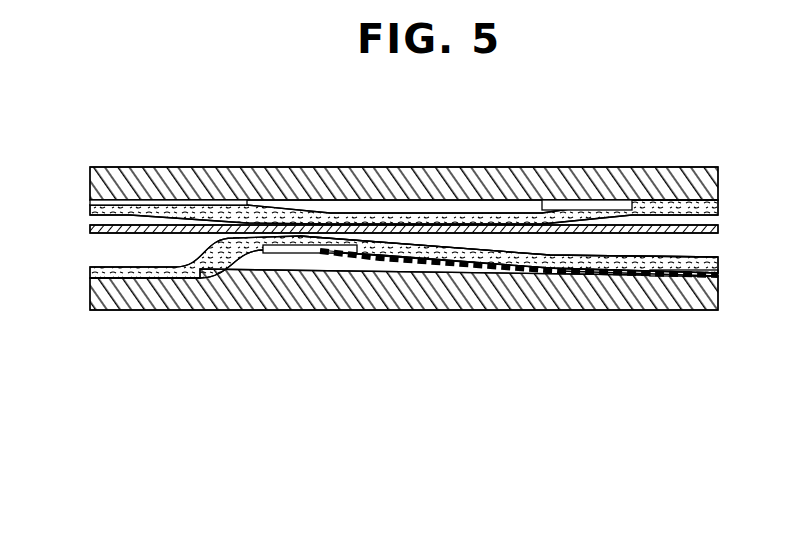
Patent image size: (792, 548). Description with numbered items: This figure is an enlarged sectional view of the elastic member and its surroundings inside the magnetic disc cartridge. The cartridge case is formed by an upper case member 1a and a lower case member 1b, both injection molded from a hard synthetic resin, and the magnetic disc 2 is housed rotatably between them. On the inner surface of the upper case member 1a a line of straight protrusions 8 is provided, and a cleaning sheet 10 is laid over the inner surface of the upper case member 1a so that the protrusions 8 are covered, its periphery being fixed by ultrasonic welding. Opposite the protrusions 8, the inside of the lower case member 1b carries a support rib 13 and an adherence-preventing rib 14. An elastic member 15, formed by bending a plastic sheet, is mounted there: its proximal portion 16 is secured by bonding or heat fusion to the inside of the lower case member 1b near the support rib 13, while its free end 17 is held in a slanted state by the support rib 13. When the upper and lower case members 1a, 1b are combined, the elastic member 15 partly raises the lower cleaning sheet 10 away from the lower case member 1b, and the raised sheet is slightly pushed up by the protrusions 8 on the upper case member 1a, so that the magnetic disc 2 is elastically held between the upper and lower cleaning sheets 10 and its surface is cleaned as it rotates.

The upper case member 1a is at (720, 181).
The lower case member 1b is at (718, 292).
The magnetic disc 2 is at (625, 213).
The protrusions 8 is at (341, 213).
The cleaning sheet 10 is at (687, 210).
The support rib 13 is at (517, 262).
The adherence-preventing rib 14 is at (290, 255).
The elastic member 15 is at (440, 255).
The proximal portion 16 is at (628, 273).
The free end 17 is at (356, 254).